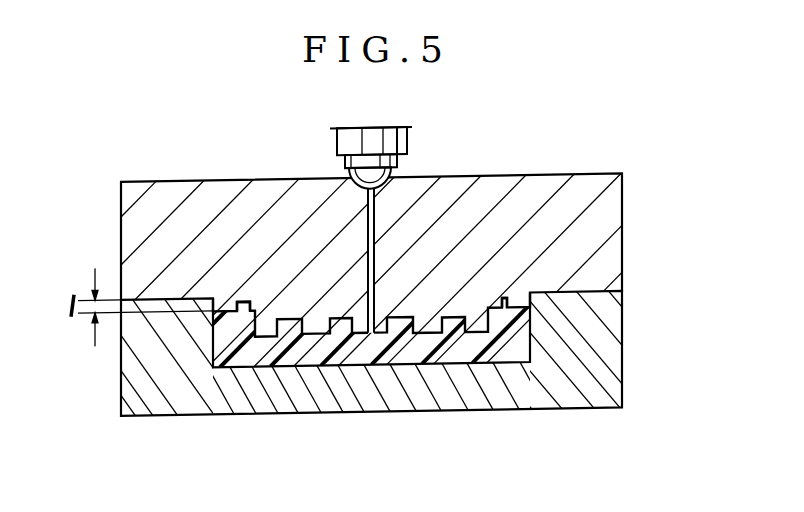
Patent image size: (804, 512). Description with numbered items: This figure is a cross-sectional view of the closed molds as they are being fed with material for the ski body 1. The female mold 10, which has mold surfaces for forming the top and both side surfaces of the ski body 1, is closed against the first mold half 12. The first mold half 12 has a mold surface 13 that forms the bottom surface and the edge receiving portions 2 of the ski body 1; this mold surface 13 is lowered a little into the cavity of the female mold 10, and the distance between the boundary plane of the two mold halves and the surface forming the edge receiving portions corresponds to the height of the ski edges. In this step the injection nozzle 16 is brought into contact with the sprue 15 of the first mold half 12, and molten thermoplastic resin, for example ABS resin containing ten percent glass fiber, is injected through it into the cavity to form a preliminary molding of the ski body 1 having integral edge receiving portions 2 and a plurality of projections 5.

The ski body 1 is at (400, 357).
The edge receiving portions 2 is at (210, 324).
The projections 5 is at (238, 305).
The female mold 10 is at (182, 386).
The first mold half 12 is at (273, 202).
The mold surface 13 is at (313, 345).
The sprue 15 is at (367, 218).
The injection nozzle 16 is at (400, 164).